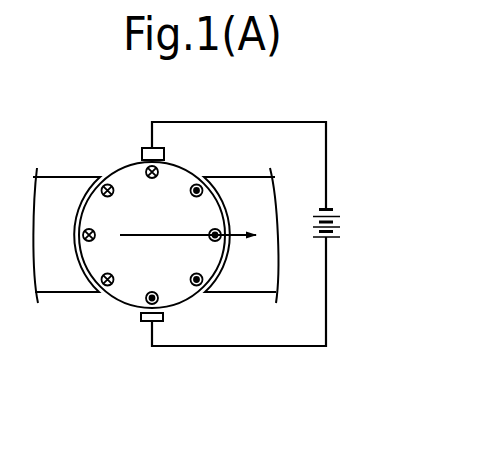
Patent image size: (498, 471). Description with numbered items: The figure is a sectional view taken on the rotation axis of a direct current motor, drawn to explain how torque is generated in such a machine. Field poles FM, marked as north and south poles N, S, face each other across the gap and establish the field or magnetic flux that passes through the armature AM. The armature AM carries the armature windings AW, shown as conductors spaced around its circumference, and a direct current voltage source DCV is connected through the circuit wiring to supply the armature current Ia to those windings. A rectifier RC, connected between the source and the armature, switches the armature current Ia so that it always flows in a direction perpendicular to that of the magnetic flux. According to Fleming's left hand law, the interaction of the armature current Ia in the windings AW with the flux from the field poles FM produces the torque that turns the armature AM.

The field poles FM is at (62, 177).
The north pole of field magnet N is at (66, 235).
The south pole of field magnet S is at (241, 235).
The armature AM is at (123, 298).
The armature windings AW is at (107, 186).
The rectifier RC is at (165, 153).
The armature current Ia is at (242, 346).
The direct current voltage source DCV is at (345, 239).